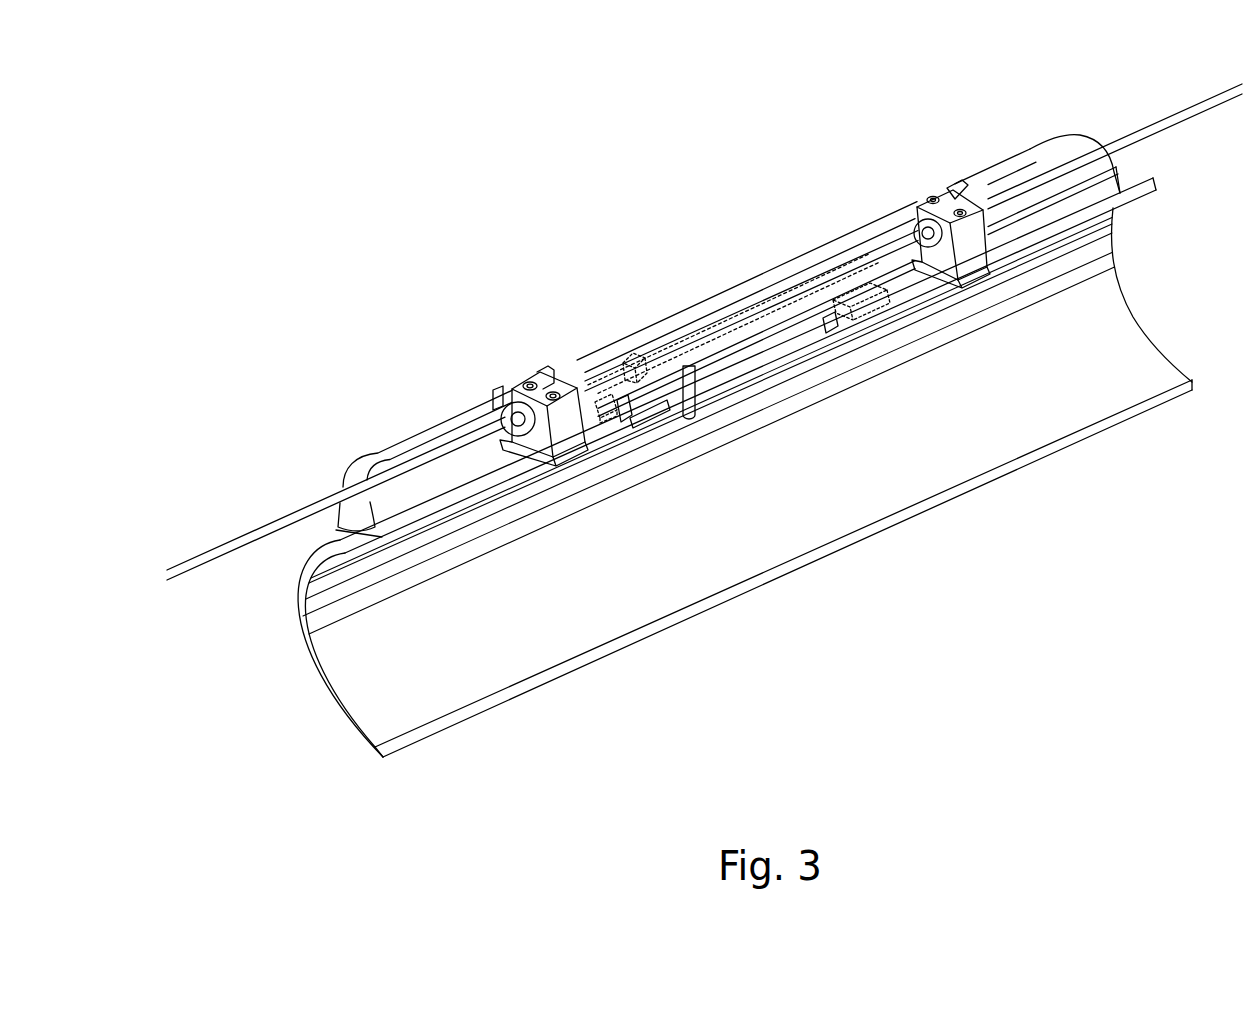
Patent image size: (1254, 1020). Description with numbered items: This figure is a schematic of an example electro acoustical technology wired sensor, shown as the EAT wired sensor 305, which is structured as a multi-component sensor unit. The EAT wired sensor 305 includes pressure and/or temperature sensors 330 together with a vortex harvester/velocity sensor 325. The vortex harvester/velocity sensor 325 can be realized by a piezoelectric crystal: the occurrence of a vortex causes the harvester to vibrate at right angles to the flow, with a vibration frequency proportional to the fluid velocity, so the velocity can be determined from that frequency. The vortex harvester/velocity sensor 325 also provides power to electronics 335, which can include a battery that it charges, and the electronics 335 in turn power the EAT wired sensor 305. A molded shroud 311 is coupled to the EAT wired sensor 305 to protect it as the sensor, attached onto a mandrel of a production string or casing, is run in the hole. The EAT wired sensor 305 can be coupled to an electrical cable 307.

The EAT wired sensor 305 is at (726, 318).
The electrical cable 307 is at (1141, 134).
The molded shroud 311 is at (856, 231).
The vortex harvester/velocity sensor 325 is at (697, 412).
The pressure and/or temperature sensors 330 is at (652, 408).
The electronics 335 is at (633, 378).